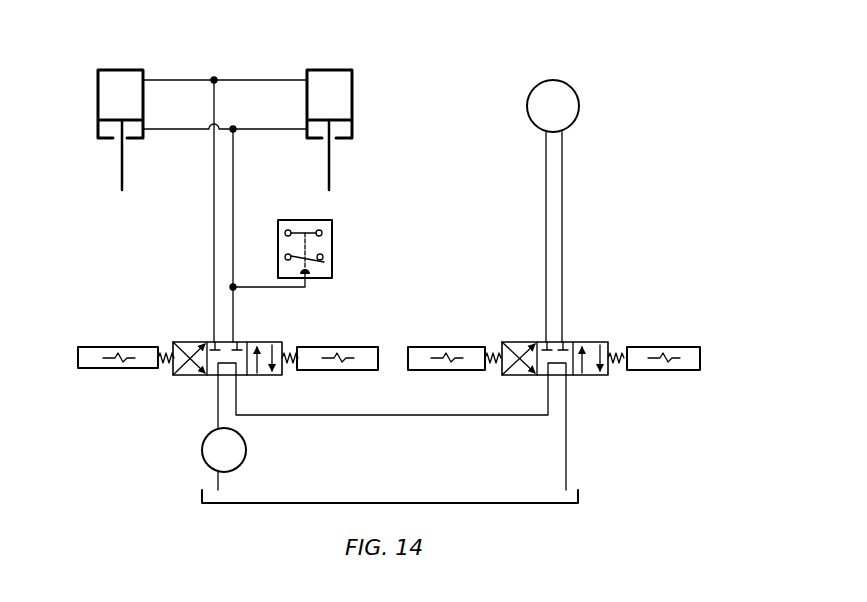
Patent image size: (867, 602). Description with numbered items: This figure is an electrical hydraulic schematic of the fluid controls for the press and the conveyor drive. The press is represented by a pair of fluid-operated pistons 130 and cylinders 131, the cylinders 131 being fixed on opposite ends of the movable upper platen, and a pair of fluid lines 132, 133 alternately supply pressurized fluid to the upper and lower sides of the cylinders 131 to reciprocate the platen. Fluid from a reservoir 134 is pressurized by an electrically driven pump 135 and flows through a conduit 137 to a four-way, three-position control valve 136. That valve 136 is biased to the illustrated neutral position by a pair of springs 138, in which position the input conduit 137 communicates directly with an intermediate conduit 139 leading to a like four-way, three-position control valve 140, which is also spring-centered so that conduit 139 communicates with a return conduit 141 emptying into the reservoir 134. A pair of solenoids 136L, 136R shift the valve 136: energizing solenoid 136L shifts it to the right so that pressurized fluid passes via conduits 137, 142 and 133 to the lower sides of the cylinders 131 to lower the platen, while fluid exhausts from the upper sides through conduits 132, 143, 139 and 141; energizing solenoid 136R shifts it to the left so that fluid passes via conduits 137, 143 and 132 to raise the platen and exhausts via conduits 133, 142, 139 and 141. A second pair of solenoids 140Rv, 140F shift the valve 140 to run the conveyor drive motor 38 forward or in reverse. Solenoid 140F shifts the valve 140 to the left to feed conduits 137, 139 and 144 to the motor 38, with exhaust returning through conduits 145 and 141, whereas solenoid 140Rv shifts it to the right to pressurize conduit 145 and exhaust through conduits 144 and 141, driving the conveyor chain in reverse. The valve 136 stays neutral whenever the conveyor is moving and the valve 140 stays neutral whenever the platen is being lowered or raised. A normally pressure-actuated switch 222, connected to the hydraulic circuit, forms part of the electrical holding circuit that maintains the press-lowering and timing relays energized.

The conveyor drive motor 38 is at (570, 83).
The piston 130 is at (121, 162).
The cylinder 131 is at (98, 87).
The fluid line 132 is at (252, 78).
The fluid line 133 is at (252, 128).
The reservoir 134 is at (295, 503).
The pump 135 is at (202, 463).
The four-way, three-position control valve 136 is at (187, 336).
The solenoid 136L is at (103, 347).
The solenoid 136R is at (345, 347).
The conduit 137 is at (215, 408).
The spring 138 is at (167, 355).
The intermediate conduit 139 is at (387, 417).
The four-way, three-position control valve 140 is at (518, 336).
The solenoid 140Rv is at (433, 347).
The solenoid 140F is at (683, 347).
The return conduit 141 is at (567, 448).
The conduit 142 is at (234, 180).
The conduit 143 is at (213, 177).
The conduit 144 is at (546, 192).
The conduit 145 is at (562, 192).
The pressure-actuated switch 222 is at (332, 245).